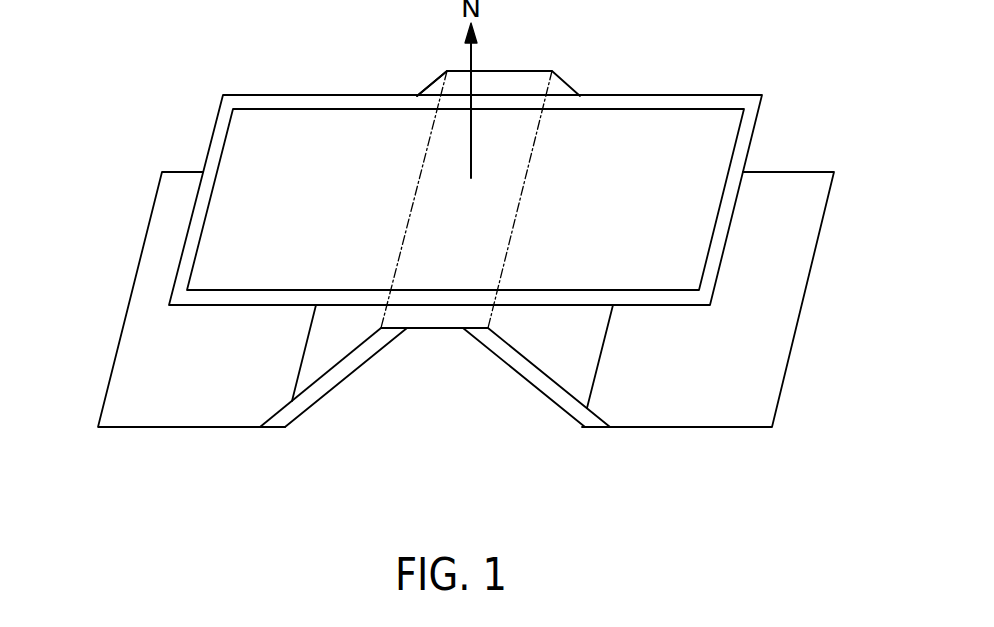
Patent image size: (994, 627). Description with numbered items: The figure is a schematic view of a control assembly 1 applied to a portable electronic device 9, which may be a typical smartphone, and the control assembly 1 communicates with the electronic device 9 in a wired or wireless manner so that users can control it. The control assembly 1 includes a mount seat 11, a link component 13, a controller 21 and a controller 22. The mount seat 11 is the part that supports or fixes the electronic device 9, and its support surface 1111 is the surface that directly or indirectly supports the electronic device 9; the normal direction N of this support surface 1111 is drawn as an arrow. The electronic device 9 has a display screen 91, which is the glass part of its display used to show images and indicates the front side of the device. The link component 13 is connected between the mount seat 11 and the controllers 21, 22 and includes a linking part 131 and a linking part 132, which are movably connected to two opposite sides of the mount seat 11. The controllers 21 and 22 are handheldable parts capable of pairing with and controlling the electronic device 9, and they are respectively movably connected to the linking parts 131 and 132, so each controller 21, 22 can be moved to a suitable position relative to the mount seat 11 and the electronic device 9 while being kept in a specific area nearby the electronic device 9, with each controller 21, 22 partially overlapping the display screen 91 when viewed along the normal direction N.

The control assembly 1 is at (92, 311).
The electronic device 9 is at (687, 96).
The display screen 91 is at (616, 142).
The mount seat 11 is at (523, 52).
The support surface 1111 is at (443, 173).
The link component 13 is at (518, 452).
The linking part 131 is at (348, 367).
The linking part 132 is at (521, 369).
The controller 21 is at (185, 410).
The controller 22 is at (702, 412).